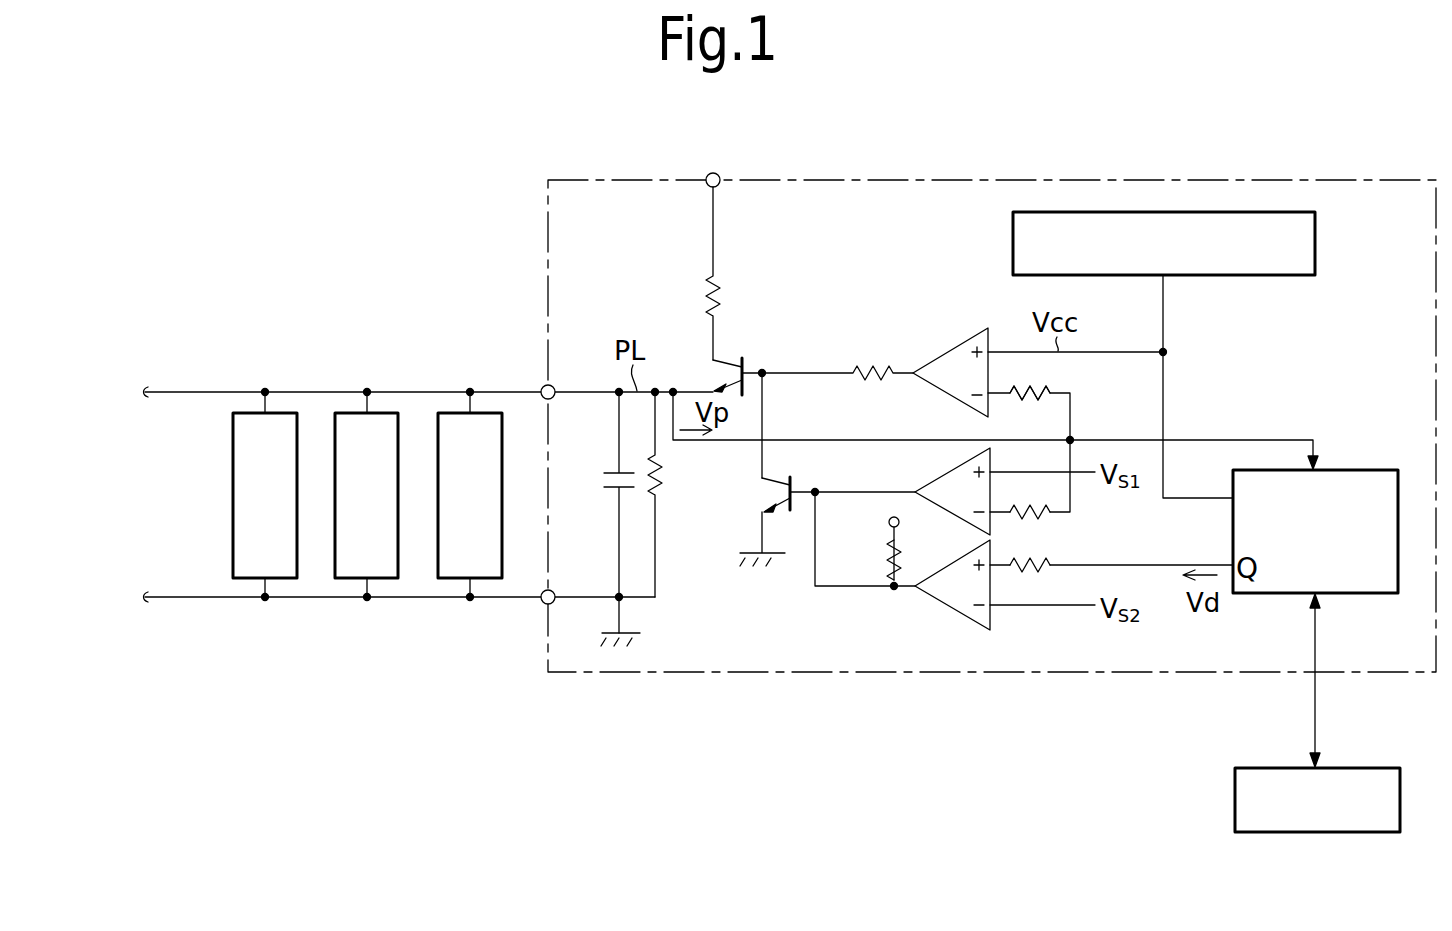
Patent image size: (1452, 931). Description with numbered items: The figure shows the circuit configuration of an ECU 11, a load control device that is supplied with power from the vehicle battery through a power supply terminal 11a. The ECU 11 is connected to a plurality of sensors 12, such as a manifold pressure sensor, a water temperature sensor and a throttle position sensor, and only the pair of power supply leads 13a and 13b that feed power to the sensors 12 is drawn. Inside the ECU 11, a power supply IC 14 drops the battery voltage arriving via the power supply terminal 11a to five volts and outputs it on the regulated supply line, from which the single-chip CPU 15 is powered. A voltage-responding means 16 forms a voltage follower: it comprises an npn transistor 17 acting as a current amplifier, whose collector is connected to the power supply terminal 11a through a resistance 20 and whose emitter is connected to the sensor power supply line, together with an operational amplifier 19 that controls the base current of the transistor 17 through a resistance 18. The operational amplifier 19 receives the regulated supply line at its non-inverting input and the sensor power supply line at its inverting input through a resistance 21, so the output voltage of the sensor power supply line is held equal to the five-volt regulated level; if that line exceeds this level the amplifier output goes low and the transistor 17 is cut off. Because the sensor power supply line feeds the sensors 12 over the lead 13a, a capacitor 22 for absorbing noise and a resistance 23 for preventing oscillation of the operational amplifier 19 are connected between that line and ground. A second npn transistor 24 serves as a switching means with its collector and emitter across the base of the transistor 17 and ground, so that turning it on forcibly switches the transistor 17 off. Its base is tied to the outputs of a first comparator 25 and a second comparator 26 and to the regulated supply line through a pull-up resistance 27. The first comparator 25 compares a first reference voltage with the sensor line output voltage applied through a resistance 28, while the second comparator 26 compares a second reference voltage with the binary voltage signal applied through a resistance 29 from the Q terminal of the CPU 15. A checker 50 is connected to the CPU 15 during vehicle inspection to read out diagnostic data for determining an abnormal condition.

The ECU 11 is at (948, 181).
The power supply terminal 11a is at (718, 172).
The sensors 12 is at (297, 430).
The power supply lead 13a is at (508, 391).
The power supply lead 13b is at (492, 599).
The power supply IC 14 is at (1292, 277).
The CPU 15 is at (1372, 596).
The voltage-responding means 16 is at (869, 362).
The npn transistor 17 is at (712, 378).
The resistance 18 is at (868, 386).
The operational amplifier 19 is at (936, 389).
The resistance 20 is at (719, 291).
The resistance 21 is at (1036, 386).
The capacitor 22 is at (600, 482).
The resistance 23 is at (662, 470).
The npn transistor 24 is at (768, 490).
The first comparator 25 is at (942, 467).
The second comparator 26 is at (946, 604).
The pull-up resistance 27 is at (900, 564).
The resistance 28 is at (1034, 521).
The resistance 29 is at (1036, 574).
The checker 50 is at (1382, 767).